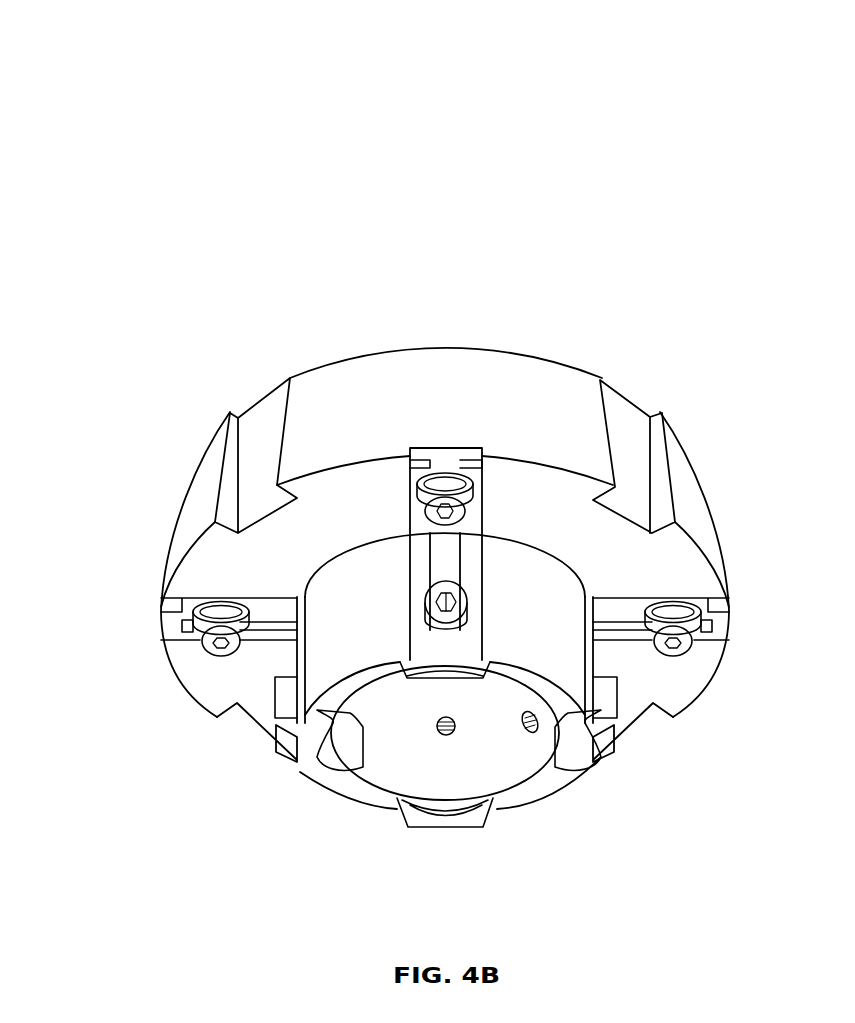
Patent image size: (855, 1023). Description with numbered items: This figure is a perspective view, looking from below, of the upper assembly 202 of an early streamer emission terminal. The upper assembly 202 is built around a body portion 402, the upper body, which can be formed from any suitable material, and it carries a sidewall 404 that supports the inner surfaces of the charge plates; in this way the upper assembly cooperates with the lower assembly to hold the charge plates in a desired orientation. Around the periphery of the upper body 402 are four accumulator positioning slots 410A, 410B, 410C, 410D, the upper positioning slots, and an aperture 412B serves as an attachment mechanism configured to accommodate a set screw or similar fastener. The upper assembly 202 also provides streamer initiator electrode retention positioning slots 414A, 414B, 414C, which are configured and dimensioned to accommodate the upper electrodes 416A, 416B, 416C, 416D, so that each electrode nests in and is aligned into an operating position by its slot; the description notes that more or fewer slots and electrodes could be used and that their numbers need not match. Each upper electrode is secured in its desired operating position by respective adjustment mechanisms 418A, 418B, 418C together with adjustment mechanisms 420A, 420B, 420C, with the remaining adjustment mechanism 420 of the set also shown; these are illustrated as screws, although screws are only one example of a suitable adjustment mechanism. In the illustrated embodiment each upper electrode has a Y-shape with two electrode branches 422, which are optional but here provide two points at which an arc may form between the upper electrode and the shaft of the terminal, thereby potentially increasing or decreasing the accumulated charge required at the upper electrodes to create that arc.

The upper assembly 202 is at (621, 158).
The body portion 402 is at (542, 620).
The sidewall 404 is at (470, 405).
The accumulator positioning slot 410A is at (638, 742).
The accumulator positioning slot 410B is at (252, 735).
The accumulator positioning slot 410C is at (248, 402).
The accumulator positioning slot 410D is at (642, 405).
The aperture 412B is at (536, 750).
The streamer initiator electrode retention positioning slot 414A is at (725, 609).
The streamer initiator electrode retention positioning slot 414B is at (417, 447).
The streamer initiator electrode retention positioning slot 414C is at (170, 609).
The upper electrode 416A is at (707, 635).
The upper electrode 416B is at (416, 471).
The upper electrode 416C is at (186, 637).
The upper electrode 416D is at (433, 820).
The adjustment mechanism 418A is at (683, 648).
The adjustment mechanism 418B is at (428, 516).
The adjustment mechanism 418C is at (205, 646).
The adjustment mechanism 420 is at (518, 812).
The adjustment mechanism 420A is at (608, 702).
The adjustment mechanism 420B is at (433, 624).
The adjustment mechanism 420C is at (282, 698).
The electrode branch 422 is at (482, 672).